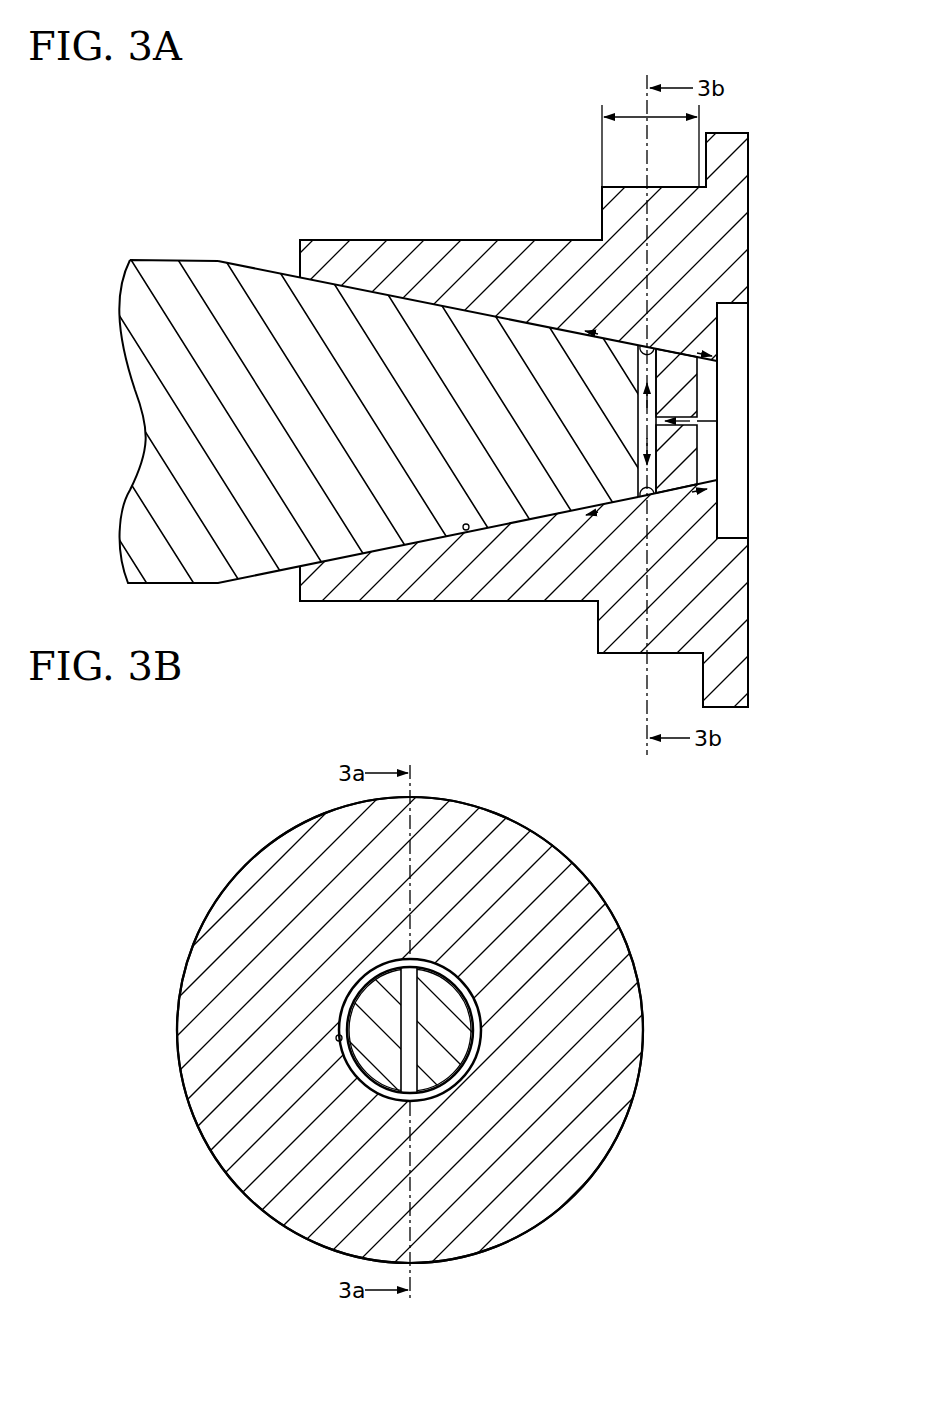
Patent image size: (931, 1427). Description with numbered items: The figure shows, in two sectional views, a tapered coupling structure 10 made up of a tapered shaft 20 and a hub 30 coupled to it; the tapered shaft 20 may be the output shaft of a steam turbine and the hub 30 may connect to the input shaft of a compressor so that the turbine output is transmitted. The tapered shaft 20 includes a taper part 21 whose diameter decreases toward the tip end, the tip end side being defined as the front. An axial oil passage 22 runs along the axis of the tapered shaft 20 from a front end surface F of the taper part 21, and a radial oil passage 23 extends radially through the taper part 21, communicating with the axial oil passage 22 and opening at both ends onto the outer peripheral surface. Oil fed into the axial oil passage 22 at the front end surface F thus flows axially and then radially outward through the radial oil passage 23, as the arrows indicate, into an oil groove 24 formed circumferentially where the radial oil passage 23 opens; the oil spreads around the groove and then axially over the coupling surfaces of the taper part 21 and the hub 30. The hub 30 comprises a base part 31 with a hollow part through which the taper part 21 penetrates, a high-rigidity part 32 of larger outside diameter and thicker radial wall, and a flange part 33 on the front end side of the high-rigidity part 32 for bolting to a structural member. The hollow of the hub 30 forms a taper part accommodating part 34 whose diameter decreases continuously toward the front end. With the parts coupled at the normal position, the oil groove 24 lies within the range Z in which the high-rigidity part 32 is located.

In FIG. 3A, the coupling structure 10 is at (295, 182).
In FIG. 3B, the coupling structure 10 is at (226, 851).
In FIG. 3A, the tapered shaft 20 is at (200, 257).
In FIG. 3B, the tapered shaft 20 is at (458, 1030).
In FIG. 3A, the taper part 21 is at (368, 288).
In FIG. 3B, the taper part 21 is at (540, 1030).
In FIG. 3A, the axial oil passage 22 is at (698, 423).
In FIG. 3A, the radial oil passage 23 is at (652, 375).
In FIG. 3B, the radial oil passage 23 is at (410, 1043).
In FIG. 3A, the oil groove 24 is at (657, 350).
In FIG. 3B, the oil groove 24 is at (458, 983).
In FIG. 3A, the hub 30 is at (401, 610).
In FIG. 3B, the hub 30 is at (197, 1128).
In FIG. 3A, the base part 31 is at (568, 603).
In FIG. 3A, the high-rigidity part 32 is at (662, 655).
In FIG. 3B, the high-rigidity part 32 is at (375, 1030).
In FIG. 3A, the flange part 33 is at (736, 708).
In FIG. 3A, the taper part accommodating part 34 is at (466, 530).
In FIG. 3B, the taper part accommodating part 34 is at (338, 1040).
In FIG. 3A, the front end surface F is at (698, 459).
In FIG. 3A, the range of high-rigidity part Z is at (633, 113).